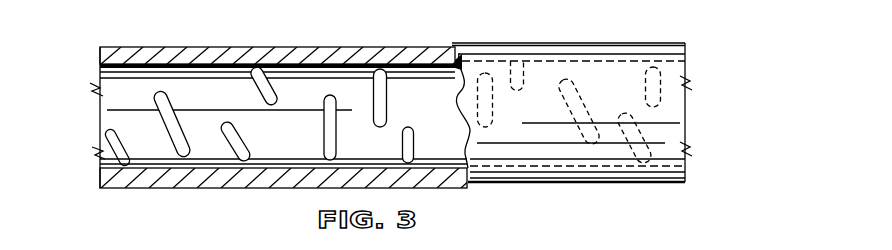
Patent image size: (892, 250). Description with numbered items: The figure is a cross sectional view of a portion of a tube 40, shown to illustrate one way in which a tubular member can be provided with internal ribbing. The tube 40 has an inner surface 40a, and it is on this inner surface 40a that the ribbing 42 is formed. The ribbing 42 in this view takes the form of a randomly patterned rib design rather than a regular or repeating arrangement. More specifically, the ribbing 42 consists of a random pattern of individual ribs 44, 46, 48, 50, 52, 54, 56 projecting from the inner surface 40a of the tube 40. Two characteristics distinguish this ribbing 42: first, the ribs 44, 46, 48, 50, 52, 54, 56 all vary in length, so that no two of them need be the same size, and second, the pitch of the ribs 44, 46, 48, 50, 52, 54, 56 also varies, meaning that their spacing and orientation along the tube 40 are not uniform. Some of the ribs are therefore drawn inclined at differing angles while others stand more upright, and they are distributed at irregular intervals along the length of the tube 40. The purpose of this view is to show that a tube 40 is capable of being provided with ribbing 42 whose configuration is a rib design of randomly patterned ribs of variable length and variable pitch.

The tube 40 is at (506, 40).
The inner surface 40a is at (426, 68).
The ribbing 42 is at (252, 133).
The rib 44 is at (100, 125).
The rib 46 is at (165, 128).
The rib 48 is at (225, 145).
The rib 50 is at (247, 70).
The rib 52 is at (338, 142).
The rib 54 is at (371, 99).
The rib 56 is at (414, 145).